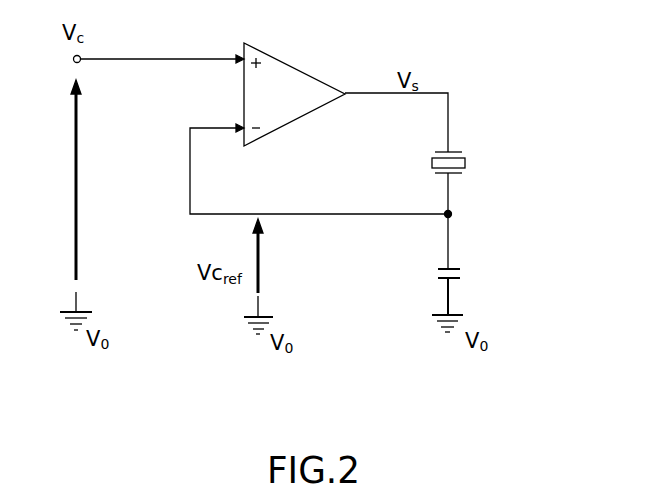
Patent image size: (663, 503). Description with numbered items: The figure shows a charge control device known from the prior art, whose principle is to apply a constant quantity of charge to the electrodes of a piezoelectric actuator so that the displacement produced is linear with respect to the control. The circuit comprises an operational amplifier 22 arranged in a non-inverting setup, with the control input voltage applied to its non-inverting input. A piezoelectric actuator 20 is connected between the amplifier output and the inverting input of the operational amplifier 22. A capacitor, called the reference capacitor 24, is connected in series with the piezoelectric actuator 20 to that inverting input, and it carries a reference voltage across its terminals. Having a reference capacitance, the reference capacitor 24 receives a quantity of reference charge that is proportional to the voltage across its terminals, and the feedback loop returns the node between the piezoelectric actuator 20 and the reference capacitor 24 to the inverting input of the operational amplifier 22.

The operational amplifier 22 is at (288, 56).
The piezoelectric actuator 20 is at (478, 149).
The reference capacitor 24 is at (474, 270).